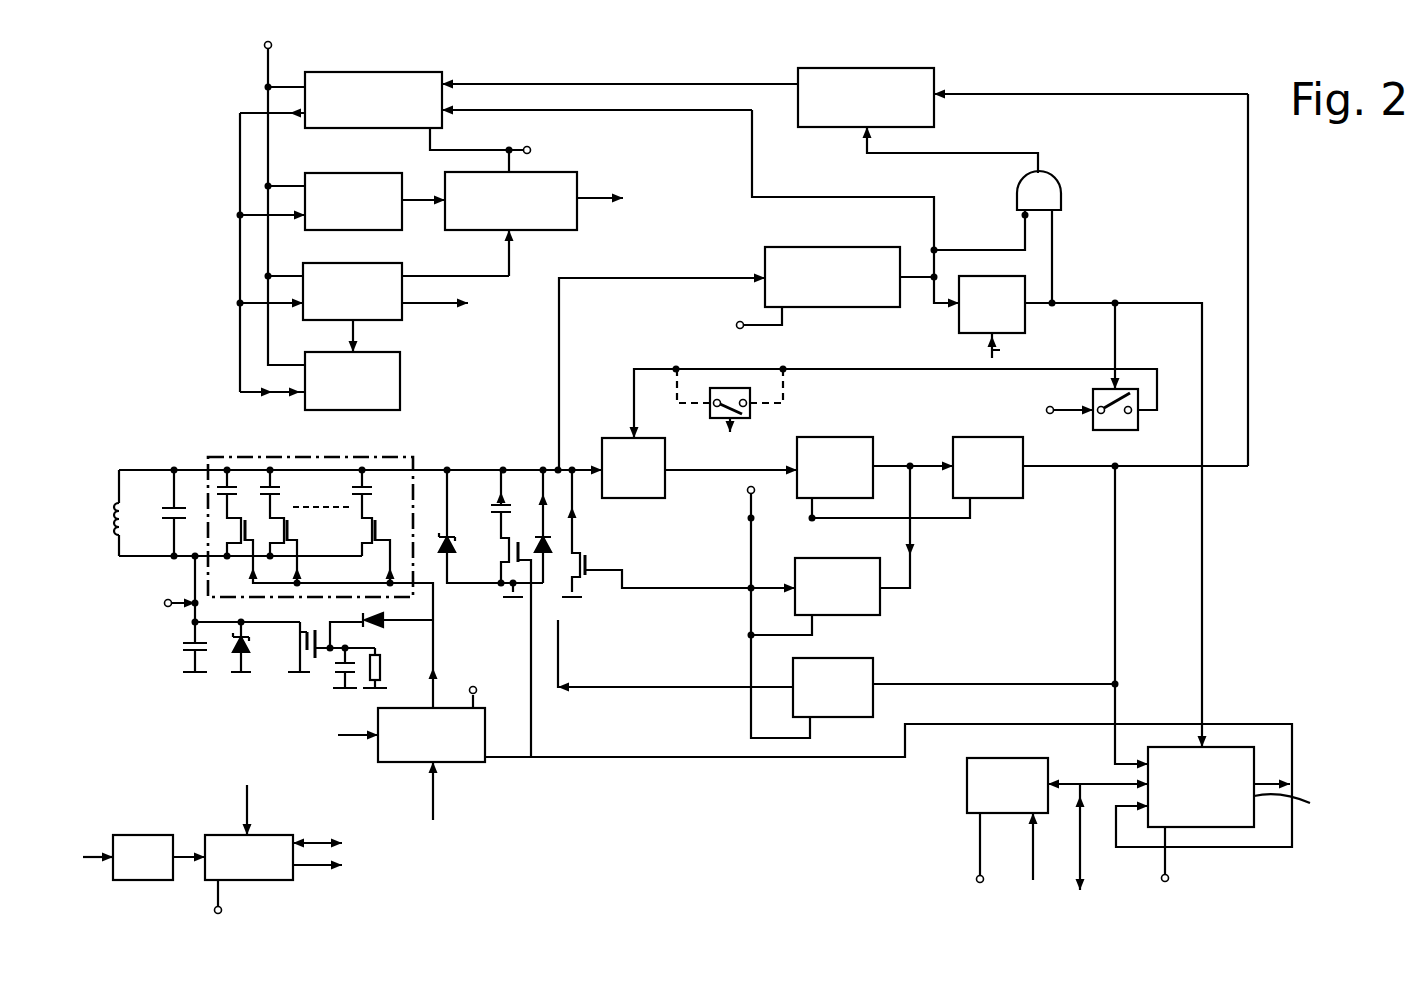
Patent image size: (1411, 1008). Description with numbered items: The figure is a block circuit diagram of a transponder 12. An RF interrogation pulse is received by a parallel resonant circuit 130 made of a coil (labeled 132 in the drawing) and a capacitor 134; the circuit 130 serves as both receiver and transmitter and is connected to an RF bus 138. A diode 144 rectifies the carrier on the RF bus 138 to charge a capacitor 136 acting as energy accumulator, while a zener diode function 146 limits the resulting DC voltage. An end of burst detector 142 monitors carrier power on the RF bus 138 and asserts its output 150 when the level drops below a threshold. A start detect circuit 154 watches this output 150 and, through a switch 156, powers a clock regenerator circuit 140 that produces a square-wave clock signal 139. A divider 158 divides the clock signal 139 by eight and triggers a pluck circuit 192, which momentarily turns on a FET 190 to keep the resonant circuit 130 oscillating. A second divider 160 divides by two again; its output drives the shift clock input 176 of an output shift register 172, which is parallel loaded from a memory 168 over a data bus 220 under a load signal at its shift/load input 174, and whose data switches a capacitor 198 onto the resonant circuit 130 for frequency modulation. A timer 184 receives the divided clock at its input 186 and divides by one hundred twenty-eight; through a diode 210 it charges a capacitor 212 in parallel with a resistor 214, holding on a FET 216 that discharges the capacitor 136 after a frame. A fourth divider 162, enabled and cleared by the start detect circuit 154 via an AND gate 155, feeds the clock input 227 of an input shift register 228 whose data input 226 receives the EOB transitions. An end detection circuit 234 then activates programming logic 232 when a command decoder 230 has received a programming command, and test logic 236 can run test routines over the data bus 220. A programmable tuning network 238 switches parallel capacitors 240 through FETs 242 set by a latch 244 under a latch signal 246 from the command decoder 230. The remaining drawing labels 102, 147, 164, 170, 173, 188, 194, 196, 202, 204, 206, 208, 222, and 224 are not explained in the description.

The transponder 12 is at (205, 166).
The output shift register 102 is at (1240, 847).
The parallel resonant circuit 130 is at (128, 545).
The coil antenna 132 is at (119, 508).
The capacitor 134 is at (166, 505).
The capacitor 136 is at (183, 647).
The RF bus 138 is at (503, 470).
The clock signal 139 is at (708, 448).
The clock regenerator circuit 140 is at (652, 498).
The end of burst detector 142 is at (808, 228).
The diode 144 is at (552, 540).
The zener diode function 146 is at (225, 655).
The zener diode 147 is at (456, 540).
The output of end of burst detection circuit 150 is at (905, 262).
The start detect circuit 154 is at (960, 336).
The AND gate 155 is at (1058, 188).
The switch 156 is at (1130, 428).
The divider 158 is at (835, 437).
The second divider 160 is at (965, 437).
The fourth divider 162 is at (870, 68).
The switch 164 is at (708, 392).
The memory 168 is at (967, 805).
The memory data line 170 is at (1048, 775).
The output shift register 172 is at (1302, 803).
The output line 173 is at (1262, 775).
The shift/load input 174 is at (1205, 745).
The shift clock input 176 is at (1140, 760).
The timer 184 is at (836, 660).
The input 186 is at (876, 686).
The counter output line 188 is at (793, 684).
The field-effect transistor 190 is at (590, 575).
The pluck circuit 192 is at (836, 558).
The pluck circuit input line 194 is at (880, 598).
The pluck circuit input line 196 is at (792, 580).
The capacitor 198 is at (495, 512).
The processor 202 is at (272, 835).
The sensor 204 is at (135, 835).
The switch / control line 206 is at (732, 434).
The control line 208 is at (531, 545).
The diode 210 is at (385, 628).
The capacitor 212 is at (333, 665).
The resistor 214 is at (380, 676).
The field-effect transistor 216 is at (308, 660).
The data bus 220 is at (240, 258).
The processor output lines 222 is at (318, 843).
The programming output line 224 is at (600, 202).
The data input 226 is at (445, 110).
The clock input 227 is at (445, 84).
The input shift register 228 is at (372, 72).
The command decoder 230 is at (402, 270).
The programming logic 232 is at (578, 190).
The end detection circuit 234 is at (357, 175).
The test logic 236 is at (402, 365).
The programmable tuning network 238 is at (240, 457).
The capacitor 240 is at (275, 487).
The field-effect transistor 242 is at (292, 528).
The latch 244 is at (485, 762).
The latch signal 246 is at (412, 306).